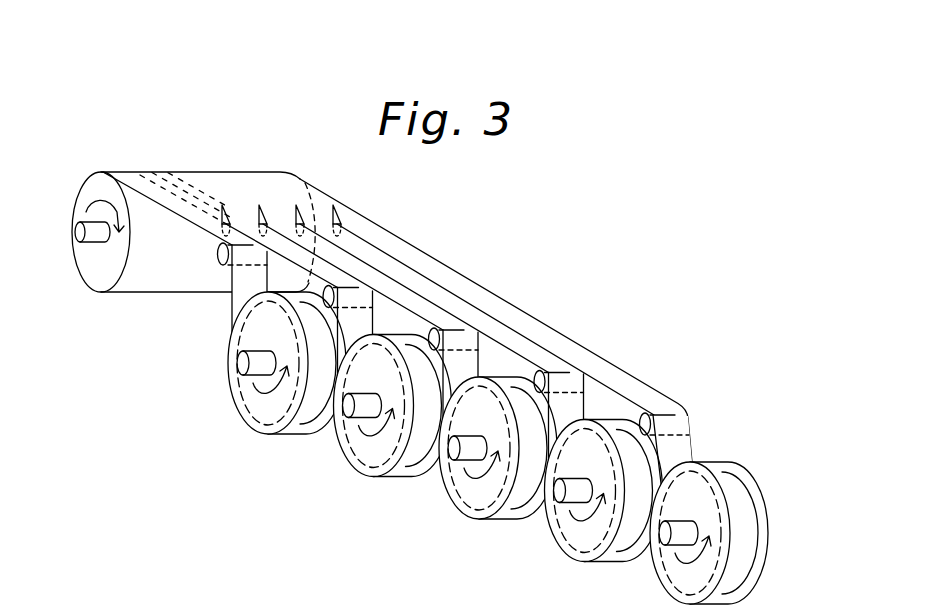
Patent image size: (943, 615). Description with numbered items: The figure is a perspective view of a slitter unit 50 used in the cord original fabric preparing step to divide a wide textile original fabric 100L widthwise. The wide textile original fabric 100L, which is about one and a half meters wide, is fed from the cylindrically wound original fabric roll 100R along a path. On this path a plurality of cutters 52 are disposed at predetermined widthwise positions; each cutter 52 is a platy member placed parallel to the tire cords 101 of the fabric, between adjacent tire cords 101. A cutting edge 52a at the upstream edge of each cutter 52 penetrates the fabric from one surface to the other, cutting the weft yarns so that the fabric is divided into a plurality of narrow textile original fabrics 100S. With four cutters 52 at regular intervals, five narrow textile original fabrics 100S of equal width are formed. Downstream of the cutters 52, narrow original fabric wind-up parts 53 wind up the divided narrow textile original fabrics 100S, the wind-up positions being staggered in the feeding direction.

The slitter unit 50 is at (435, 361).
The cutter 52 is at (334, 205).
The cutting edge 52a is at (220, 212).
The narrow original fabric wind-up part 53 is at (356, 510).
The wide textile original fabric 100L is at (166, 172).
The original fabric roll 100R is at (142, 283).
The narrow textile original fabric 100S is at (372, 246).
The tire cord 101 is at (110, 172).